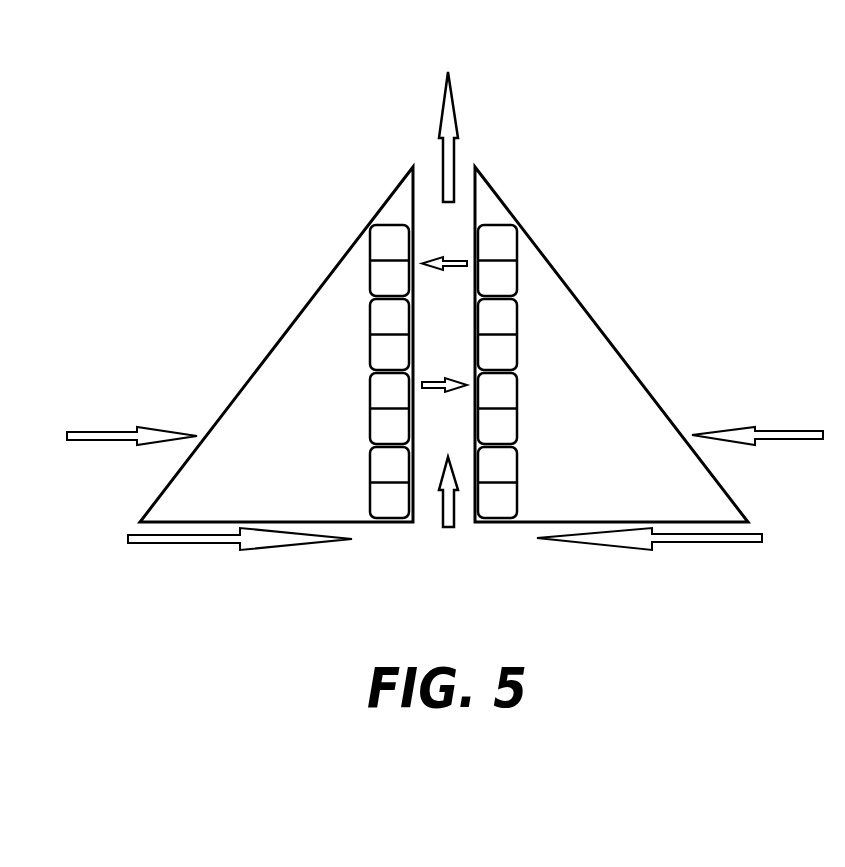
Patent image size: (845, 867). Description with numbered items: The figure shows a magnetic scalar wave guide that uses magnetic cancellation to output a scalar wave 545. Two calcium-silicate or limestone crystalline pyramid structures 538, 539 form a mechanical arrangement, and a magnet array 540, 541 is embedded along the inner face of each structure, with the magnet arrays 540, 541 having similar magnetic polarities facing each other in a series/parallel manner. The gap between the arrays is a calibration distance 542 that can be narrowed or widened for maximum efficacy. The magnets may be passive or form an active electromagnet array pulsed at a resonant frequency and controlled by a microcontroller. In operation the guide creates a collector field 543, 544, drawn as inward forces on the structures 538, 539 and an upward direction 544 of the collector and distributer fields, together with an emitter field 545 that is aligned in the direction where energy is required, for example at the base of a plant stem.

The crystalline pyramid structure 538 is at (599, 348).
The crystalline pyramid structure 539 is at (301, 346).
The magnet array 540 is at (374, 254).
The magnet array 541 is at (514, 273).
The calibration distance 542 is at (450, 256).
The collector field 543 is at (105, 431).
The inward and upward direction 544 is at (454, 521).
The scalar wave / emitter field 545 is at (456, 127).